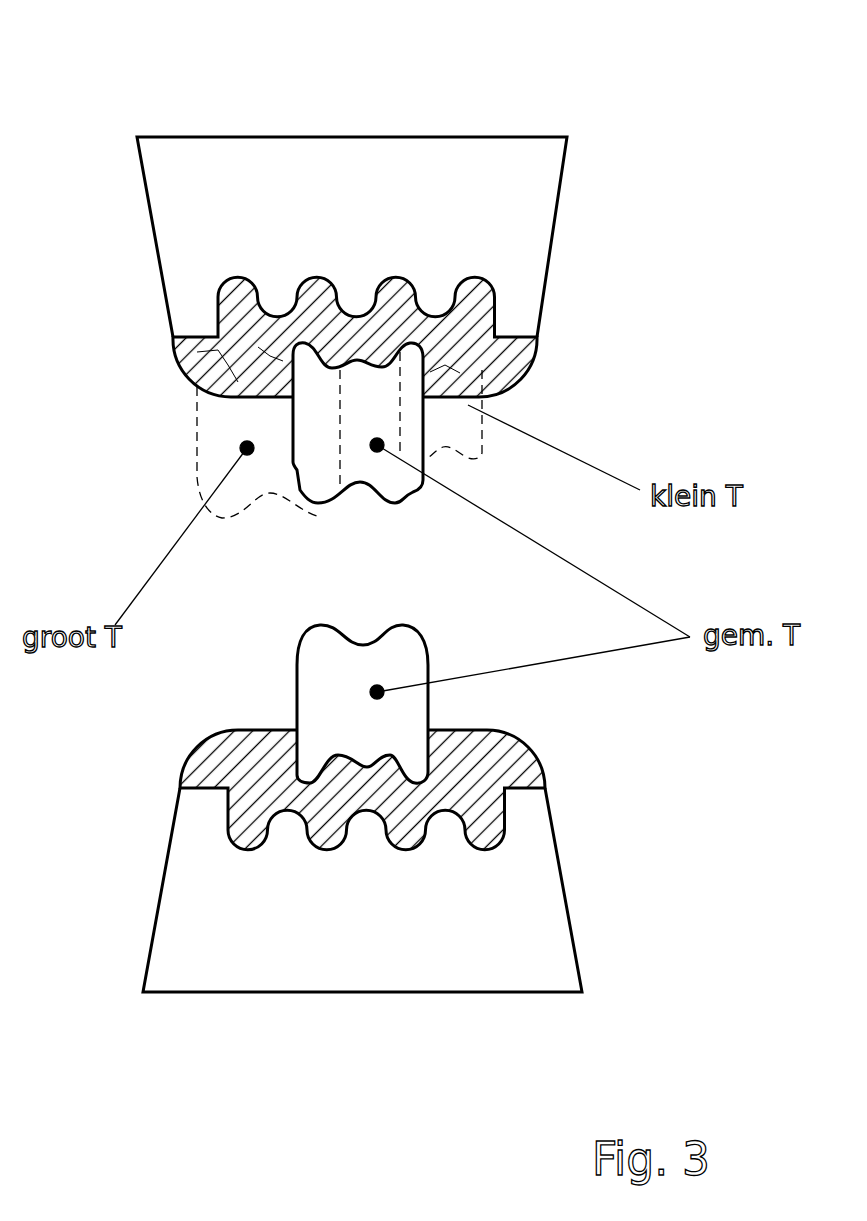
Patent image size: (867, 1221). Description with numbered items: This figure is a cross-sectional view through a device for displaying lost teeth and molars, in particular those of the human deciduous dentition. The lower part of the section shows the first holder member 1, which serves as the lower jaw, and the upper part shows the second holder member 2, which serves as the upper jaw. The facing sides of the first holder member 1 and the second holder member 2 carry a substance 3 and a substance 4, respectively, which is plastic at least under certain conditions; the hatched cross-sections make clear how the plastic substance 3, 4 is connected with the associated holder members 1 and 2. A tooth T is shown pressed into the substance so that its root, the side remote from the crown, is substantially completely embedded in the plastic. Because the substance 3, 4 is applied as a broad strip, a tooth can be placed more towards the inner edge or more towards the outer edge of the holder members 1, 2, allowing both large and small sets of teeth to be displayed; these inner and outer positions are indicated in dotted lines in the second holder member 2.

The first holder member 1 is at (480, 907).
The second holder member 2 is at (498, 233).
The plastic substance 3 is at (487, 757).
The plastic substance 4 is at (282, 333).